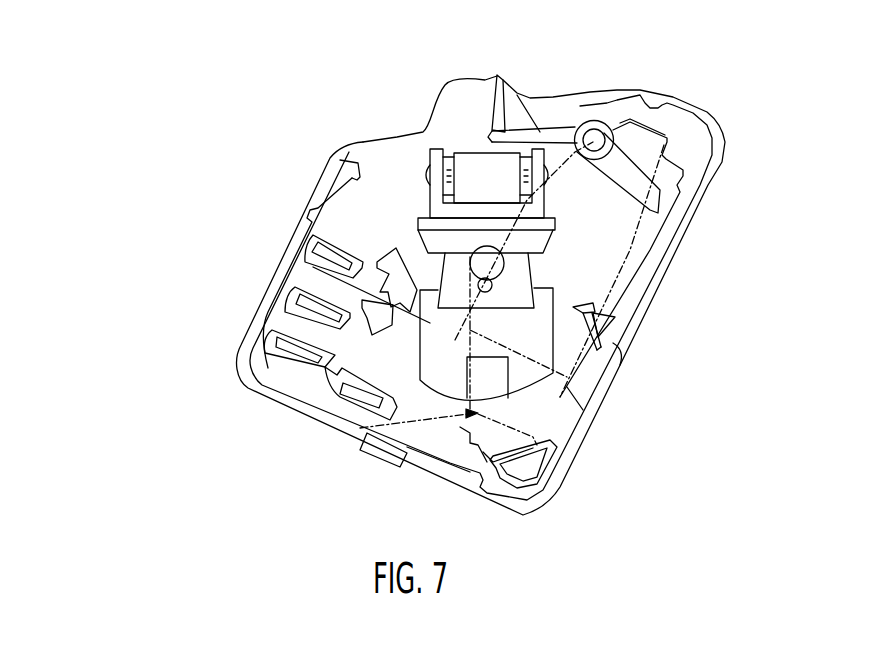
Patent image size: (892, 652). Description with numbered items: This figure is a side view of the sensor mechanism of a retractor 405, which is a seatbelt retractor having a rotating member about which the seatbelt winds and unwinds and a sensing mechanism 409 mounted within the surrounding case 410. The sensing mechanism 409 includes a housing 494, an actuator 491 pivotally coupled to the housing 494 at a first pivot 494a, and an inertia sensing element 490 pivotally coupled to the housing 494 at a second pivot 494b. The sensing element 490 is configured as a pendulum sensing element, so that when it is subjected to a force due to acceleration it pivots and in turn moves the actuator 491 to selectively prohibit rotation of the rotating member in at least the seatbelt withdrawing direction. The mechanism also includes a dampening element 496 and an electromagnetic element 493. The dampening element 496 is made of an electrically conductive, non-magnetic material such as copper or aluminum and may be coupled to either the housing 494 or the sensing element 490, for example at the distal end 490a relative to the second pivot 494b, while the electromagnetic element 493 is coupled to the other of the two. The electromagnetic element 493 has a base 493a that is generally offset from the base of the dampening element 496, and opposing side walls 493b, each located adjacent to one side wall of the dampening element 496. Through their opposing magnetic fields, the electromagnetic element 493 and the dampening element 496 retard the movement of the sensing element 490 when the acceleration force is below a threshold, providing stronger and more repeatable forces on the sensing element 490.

The retractor 405 is at (182, 108).
The sensing mechanism 409 is at (299, 63).
The housing 410 is at (363, 142).
The actuator 491 is at (503, 78).
The first pivot 494a is at (595, 138).
The housing 494 is at (606, 222).
The second pivot 494b is at (583, 308).
The inertia sensing element 490 is at (313, 267).
The dampening element 496 is at (430, 323).
The distal end 490a is at (467, 378).
The electromagnetic element 493 is at (360, 428).
The side walls 493b is at (495, 453).
The base 493a is at (483, 463).